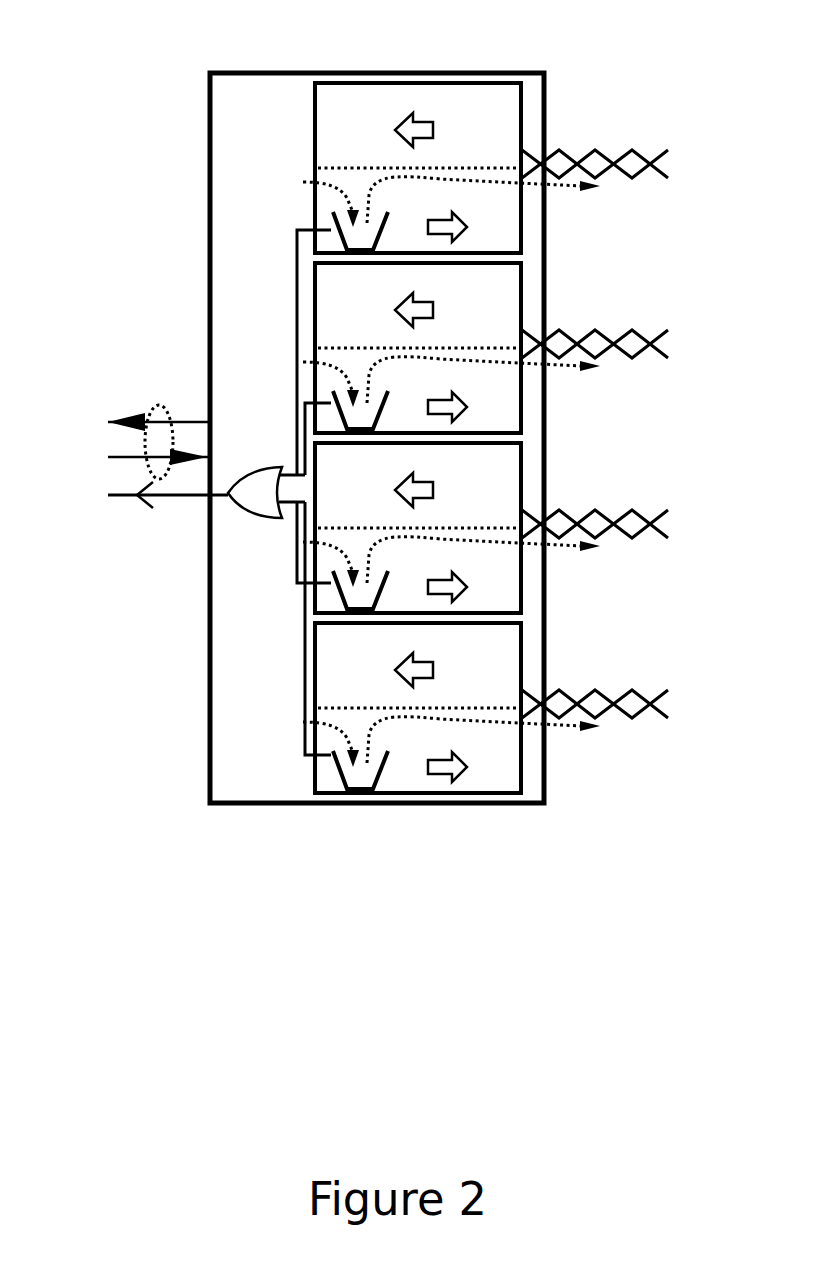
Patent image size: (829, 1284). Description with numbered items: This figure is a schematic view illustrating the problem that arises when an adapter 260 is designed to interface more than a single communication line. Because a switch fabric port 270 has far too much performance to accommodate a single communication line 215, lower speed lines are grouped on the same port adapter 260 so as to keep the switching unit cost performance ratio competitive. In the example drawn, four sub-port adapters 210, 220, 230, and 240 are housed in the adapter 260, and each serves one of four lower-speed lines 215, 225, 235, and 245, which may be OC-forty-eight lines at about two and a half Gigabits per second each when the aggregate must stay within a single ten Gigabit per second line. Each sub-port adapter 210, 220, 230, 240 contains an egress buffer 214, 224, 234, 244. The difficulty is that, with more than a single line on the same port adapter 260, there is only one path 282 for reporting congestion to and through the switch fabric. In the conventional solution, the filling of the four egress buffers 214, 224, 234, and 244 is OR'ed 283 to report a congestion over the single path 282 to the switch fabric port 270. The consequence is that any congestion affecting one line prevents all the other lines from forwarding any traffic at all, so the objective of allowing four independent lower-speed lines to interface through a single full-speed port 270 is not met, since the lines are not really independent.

The adapter 260 is at (452, 55).
The sub-port adapter 210 is at (531, 108).
The egress buffer 214 is at (322, 218).
The communication line 215 is at (630, 138).
The sub-port adapter 220 is at (531, 277).
The egress buffer 224 is at (322, 390).
The communication line 225 is at (630, 318).
The sub-port adapter 230 is at (531, 463).
The egress buffer 234 is at (328, 597).
The communication line 235 is at (630, 497).
The sub-port adapter 240 is at (531, 630).
The egress buffer 244 is at (330, 775).
The communication line 245 is at (630, 677).
The switch fabric port 270 is at (155, 388).
The path 282 is at (170, 509).
The OR 283 is at (239, 521).